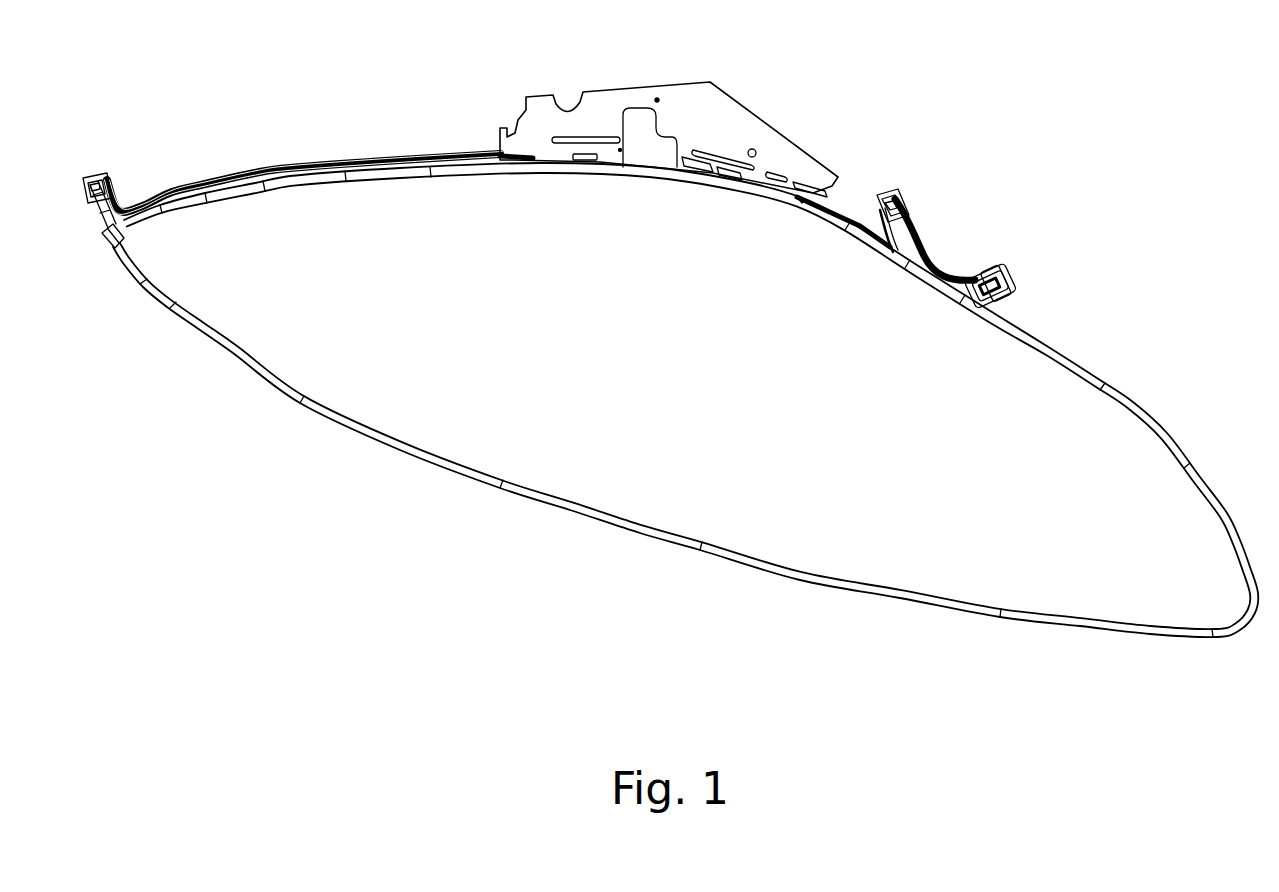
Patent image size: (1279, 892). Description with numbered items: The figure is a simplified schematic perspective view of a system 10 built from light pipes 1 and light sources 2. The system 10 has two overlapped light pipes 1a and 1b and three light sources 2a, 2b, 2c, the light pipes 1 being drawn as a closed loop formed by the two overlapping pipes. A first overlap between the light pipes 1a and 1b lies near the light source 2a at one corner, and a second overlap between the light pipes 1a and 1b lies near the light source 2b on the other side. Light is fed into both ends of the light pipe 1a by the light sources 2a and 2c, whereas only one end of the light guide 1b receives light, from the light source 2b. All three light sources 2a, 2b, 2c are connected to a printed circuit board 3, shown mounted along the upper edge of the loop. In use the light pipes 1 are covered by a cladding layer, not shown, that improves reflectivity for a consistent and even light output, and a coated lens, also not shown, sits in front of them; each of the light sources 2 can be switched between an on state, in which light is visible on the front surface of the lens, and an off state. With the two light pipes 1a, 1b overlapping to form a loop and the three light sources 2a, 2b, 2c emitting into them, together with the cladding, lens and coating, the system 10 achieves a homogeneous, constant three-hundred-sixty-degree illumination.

The light pipes 1 is at (678, 400).
The light pipe 1a is at (655, 555).
The light pipe 1b is at (360, 200).
The light sources 2 is at (580, 207).
The light source 2a is at (96, 171).
The light source 2b is at (1011, 286).
The light source 2c is at (893, 191).
The printed circuit board 3 is at (740, 126).
The system 10 is at (669, 415).